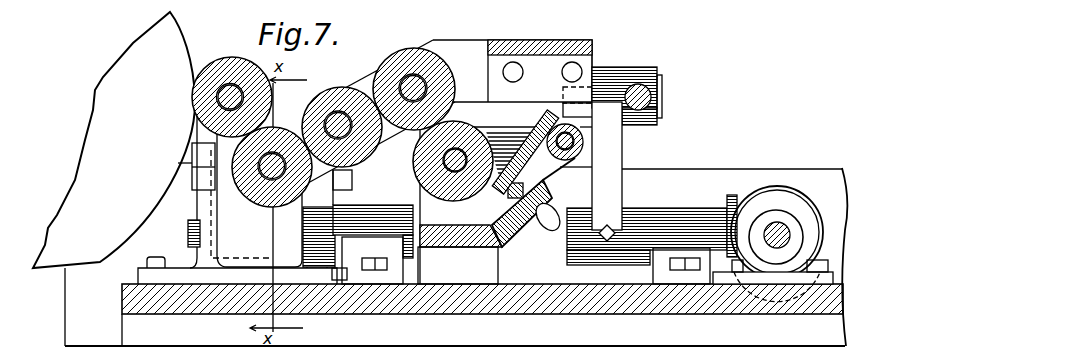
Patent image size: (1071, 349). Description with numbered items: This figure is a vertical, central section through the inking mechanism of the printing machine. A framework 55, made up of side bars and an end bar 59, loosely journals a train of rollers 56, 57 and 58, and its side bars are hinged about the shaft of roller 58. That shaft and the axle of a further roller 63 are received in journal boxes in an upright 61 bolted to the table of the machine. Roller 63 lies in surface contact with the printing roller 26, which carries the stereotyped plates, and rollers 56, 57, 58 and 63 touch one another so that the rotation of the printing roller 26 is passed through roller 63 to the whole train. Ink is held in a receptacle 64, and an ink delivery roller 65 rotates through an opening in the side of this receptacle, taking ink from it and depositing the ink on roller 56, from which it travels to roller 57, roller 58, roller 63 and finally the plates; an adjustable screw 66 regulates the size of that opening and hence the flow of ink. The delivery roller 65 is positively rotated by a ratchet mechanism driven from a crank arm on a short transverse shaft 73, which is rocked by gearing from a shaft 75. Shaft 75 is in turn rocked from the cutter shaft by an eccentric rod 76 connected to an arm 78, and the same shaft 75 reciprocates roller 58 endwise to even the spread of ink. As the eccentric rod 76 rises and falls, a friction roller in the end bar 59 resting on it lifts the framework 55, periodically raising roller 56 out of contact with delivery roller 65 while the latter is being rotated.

The printing roller 26 is at (168, 37).
The framework 55 is at (513, 71).
The roller 56 is at (417, 42).
The roller 57 is at (340, 89).
The roller 58 is at (268, 130).
The end bar 59 is at (562, 46).
The upright 61 is at (240, 184).
The roller 63 is at (228, 58).
The ink receptacle 64 is at (537, 152).
The ink delivery roller 65 is at (463, 196).
The adjustable screw 66 is at (556, 212).
The short shaft 73 is at (784, 228).
The shaft 75 is at (524, 248).
The eccentric rod 76 is at (662, 90).
The arm 78 is at (607, 171).